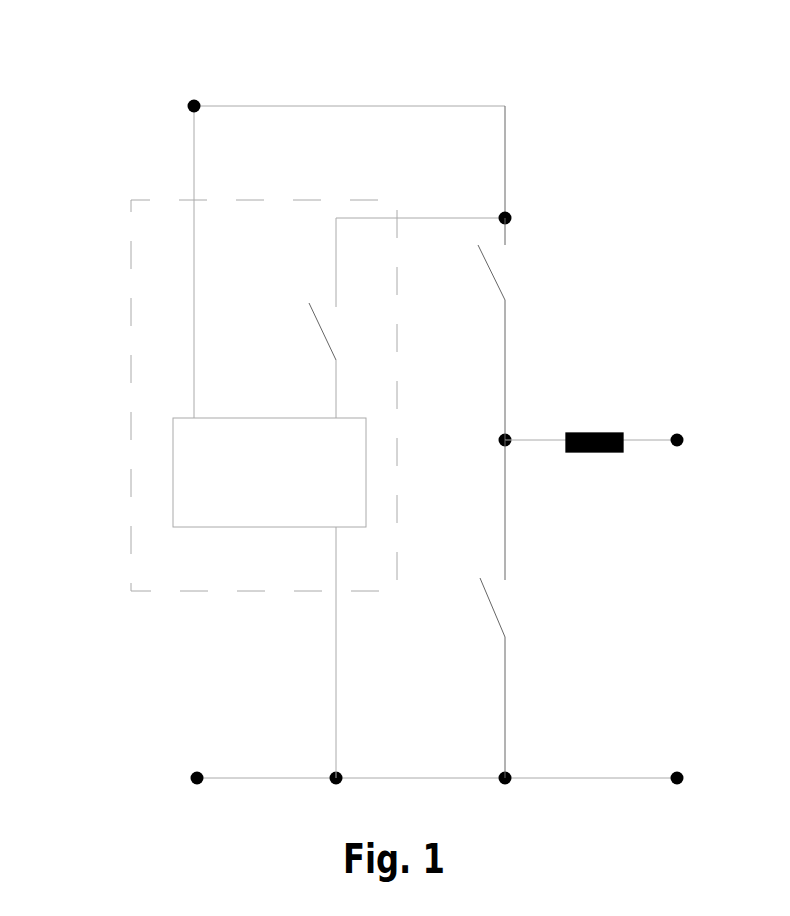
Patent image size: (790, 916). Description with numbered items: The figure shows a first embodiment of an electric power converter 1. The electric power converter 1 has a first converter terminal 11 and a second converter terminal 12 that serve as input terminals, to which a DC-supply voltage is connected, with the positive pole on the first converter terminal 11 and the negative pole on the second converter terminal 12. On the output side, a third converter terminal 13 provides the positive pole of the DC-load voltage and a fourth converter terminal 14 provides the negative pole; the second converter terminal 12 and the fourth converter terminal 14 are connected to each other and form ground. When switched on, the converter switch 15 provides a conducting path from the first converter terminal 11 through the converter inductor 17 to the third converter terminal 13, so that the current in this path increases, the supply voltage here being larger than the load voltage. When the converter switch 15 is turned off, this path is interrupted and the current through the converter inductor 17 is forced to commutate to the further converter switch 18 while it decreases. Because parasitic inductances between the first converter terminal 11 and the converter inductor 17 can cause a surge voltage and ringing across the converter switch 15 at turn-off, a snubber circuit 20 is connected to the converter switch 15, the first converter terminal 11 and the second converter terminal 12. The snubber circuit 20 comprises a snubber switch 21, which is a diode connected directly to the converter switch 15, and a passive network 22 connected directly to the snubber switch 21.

The electric power converter 1 is at (153, 80).
The first converter terminal 11 is at (190, 108).
The second converter terminal 12 is at (190, 773).
The third converter terminal 13 is at (677, 432).
The fourth converter terminal 14 is at (677, 770).
The converter switch 15 is at (493, 275).
The converter inductor 17 is at (594, 433).
The further converter switch 18 is at (497, 615).
The snubber circuit 20 is at (130, 427).
The snubber switch 21 is at (333, 342).
The passive network 22 is at (173, 498).